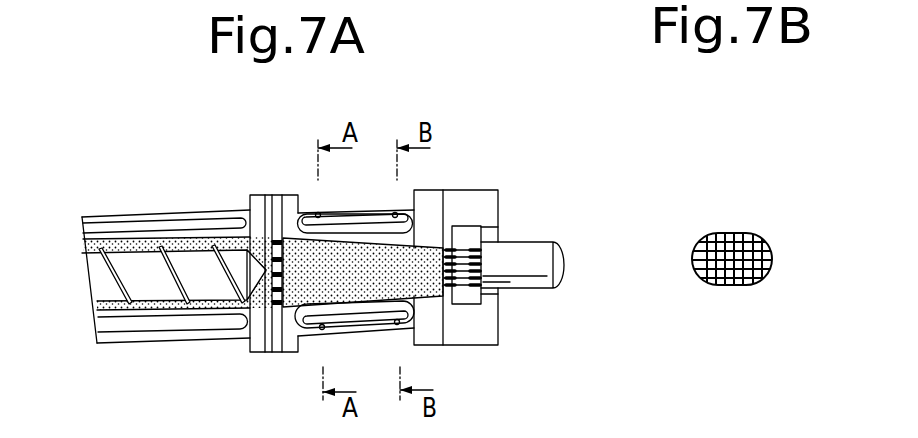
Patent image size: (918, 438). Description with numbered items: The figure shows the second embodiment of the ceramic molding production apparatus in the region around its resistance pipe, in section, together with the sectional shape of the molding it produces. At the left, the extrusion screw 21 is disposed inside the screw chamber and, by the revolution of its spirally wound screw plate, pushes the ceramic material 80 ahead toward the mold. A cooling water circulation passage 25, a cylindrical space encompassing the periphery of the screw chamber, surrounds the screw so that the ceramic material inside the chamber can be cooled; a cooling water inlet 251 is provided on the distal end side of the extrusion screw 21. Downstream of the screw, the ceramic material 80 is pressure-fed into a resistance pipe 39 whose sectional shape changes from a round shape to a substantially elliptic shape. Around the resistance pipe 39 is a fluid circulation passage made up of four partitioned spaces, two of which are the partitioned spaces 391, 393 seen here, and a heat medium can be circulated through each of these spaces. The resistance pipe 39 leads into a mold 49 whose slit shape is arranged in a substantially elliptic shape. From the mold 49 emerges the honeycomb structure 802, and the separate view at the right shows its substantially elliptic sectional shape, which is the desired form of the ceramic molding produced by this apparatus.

In FIG. 7A, the extrusion screw 21 is at (97, 285).
In FIG. 7A, the cooling water circulation passage 25 is at (108, 222).
In FIG. 7A, the cooling water inlet 251 is at (181, 215).
In FIG. 7A, the ceramic material 80 is at (293, 253).
In FIG. 7A, the partitioned space 391 is at (359, 226).
In FIG. 7A, the resistance pipe 39 is at (350, 312).
In FIG. 7A, the partitioned space 393 is at (333, 325).
In FIG. 7A, the mold 49 is at (480, 307).
In FIG. 7A, the honeycomb structure 802 is at (528, 252).
In FIG. 7B, the honeycomb structure 802 is at (735, 236).